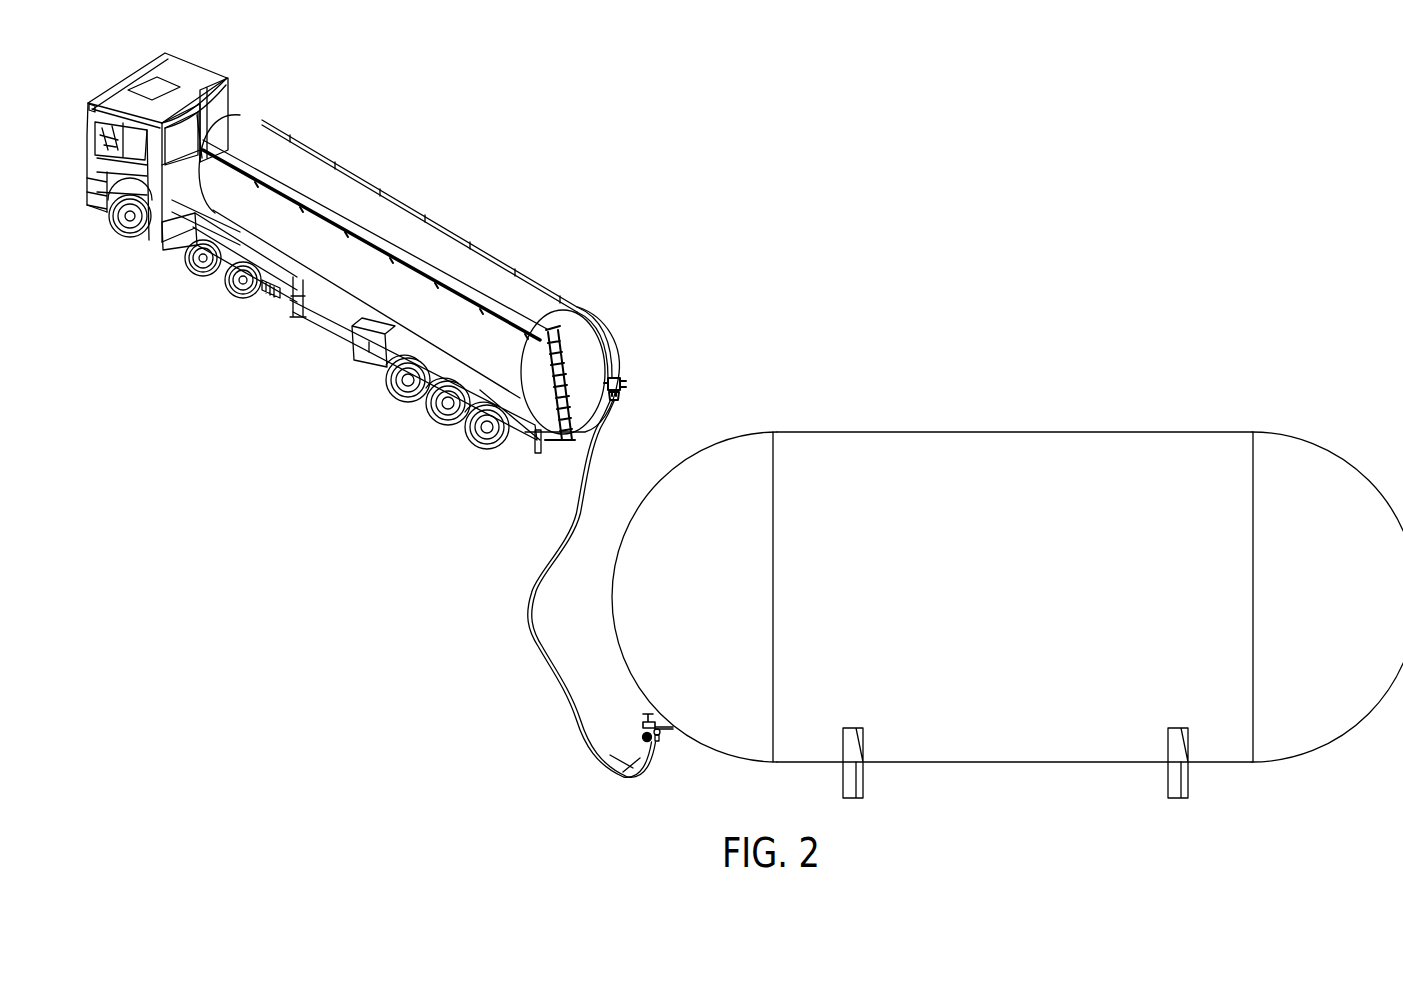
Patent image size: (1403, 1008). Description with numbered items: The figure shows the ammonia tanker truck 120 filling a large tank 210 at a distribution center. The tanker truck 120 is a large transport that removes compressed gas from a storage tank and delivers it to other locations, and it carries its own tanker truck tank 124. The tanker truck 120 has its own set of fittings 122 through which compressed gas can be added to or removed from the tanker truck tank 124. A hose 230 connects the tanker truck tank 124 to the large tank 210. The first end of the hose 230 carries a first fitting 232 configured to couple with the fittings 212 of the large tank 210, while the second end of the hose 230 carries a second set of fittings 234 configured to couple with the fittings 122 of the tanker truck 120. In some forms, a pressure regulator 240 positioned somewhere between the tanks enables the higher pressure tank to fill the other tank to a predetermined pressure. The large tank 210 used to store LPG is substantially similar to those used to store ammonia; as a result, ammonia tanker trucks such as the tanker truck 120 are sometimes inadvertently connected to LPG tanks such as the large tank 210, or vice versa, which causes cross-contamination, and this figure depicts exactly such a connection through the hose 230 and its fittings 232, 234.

The tanker truck 120 is at (392, 192).
The tanker truck tank 124 is at (447, 253).
The fittings 122 is at (618, 383).
The second set of fittings 234 is at (618, 393).
The hose 230 is at (590, 487).
The large tank 210 is at (893, 533).
The fittings 212 is at (645, 717).
The first fitting 232 is at (660, 740).
The pressure regulator 240 is at (643, 738).